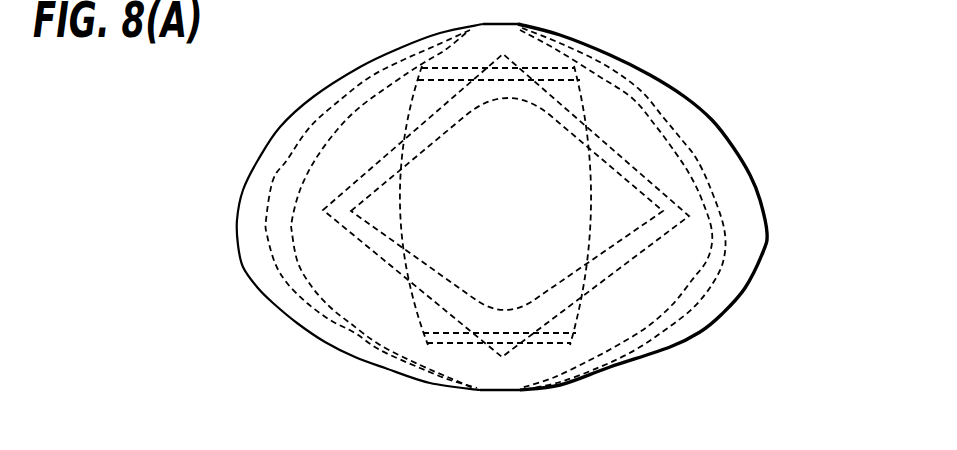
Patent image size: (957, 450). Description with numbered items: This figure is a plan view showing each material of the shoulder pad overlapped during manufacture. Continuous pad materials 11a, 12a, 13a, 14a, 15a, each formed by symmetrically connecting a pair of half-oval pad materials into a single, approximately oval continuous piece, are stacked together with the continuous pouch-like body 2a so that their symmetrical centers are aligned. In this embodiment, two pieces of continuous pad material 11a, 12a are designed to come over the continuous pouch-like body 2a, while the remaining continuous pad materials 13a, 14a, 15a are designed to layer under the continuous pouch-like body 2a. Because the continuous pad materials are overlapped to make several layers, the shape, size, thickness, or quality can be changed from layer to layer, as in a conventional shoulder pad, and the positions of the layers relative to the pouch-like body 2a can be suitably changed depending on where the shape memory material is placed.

The continuous pouch-like body 2a is at (588, 230).
The continuous pad material 11a is at (695, 332).
The continuous pad material 12a is at (690, 275).
The continuous pad material 13a is at (662, 233).
The continuous pad material 14a is at (650, 196).
The continuous pad material 15a is at (707, 151).